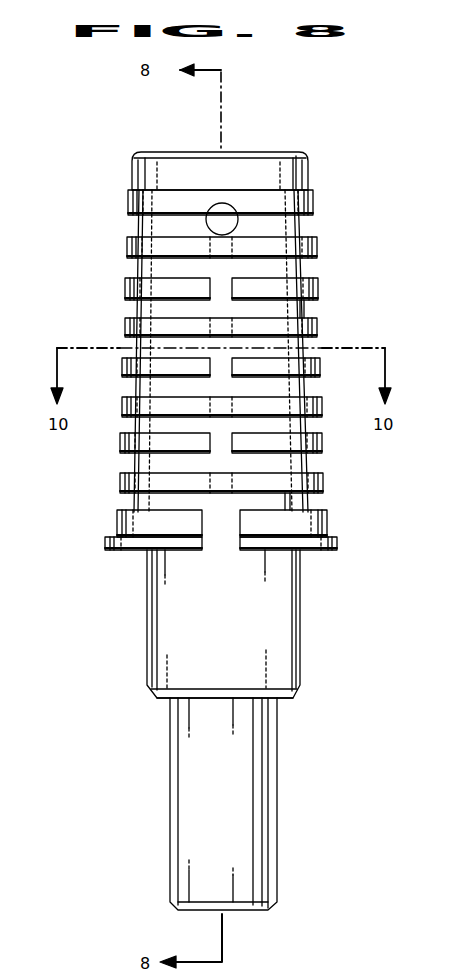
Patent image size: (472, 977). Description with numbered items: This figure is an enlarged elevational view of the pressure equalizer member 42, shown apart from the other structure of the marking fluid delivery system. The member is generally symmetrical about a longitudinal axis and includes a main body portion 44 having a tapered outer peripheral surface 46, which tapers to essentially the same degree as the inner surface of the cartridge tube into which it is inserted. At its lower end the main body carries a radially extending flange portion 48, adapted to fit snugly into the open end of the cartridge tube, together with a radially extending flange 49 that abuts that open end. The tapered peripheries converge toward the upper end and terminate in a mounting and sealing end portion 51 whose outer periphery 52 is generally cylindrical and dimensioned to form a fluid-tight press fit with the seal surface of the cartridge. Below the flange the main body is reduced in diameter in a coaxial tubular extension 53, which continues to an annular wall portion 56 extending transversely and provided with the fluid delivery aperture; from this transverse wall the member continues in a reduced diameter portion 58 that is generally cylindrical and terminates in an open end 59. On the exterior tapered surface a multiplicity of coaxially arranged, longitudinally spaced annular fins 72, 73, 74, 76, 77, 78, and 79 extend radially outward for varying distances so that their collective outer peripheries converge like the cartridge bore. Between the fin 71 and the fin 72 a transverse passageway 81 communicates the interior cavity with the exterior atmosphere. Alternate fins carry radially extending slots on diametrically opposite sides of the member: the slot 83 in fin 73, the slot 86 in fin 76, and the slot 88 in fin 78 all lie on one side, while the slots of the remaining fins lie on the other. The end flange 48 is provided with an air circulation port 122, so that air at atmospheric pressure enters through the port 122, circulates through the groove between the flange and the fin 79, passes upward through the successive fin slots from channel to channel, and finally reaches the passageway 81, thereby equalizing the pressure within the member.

The pressure equalizer member 42 is at (336, 241).
The main body portion 44 is at (283, 505).
The tapered outer peripheral surface 46 is at (306, 306).
The radially extending flange portion 48 is at (315, 522).
The radially extending flange 49 is at (318, 542).
The mounting and sealing end portion 51 is at (298, 176).
The outer periphery 52 is at (137, 180).
The coaxial tubular extension 53 is at (233, 632).
The annular wall portion 56 is at (283, 700).
The reduced diameter portion 58 is at (229, 799).
The open end 59 is at (260, 915).
The fin 71 is at (145, 205).
The annular fin 72 is at (148, 248).
The annular fin 73 is at (292, 292).
The annular fin 74 is at (150, 328).
The annular fin 76 is at (292, 369).
The annular fin 77 is at (147, 410).
The annular fin 78 is at (297, 443).
The annular fin 79 is at (142, 483).
The transverse passageway 81 is at (222, 218).
The slot 83 is at (221, 284).
The slot 86 is at (218, 368).
The slot 88 is at (218, 444).
The air circulation port 122 is at (220, 532).